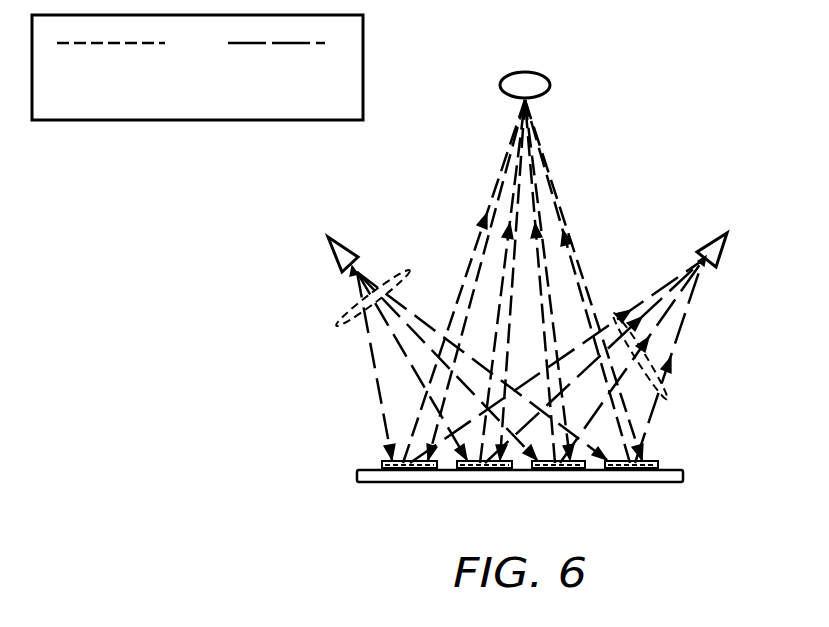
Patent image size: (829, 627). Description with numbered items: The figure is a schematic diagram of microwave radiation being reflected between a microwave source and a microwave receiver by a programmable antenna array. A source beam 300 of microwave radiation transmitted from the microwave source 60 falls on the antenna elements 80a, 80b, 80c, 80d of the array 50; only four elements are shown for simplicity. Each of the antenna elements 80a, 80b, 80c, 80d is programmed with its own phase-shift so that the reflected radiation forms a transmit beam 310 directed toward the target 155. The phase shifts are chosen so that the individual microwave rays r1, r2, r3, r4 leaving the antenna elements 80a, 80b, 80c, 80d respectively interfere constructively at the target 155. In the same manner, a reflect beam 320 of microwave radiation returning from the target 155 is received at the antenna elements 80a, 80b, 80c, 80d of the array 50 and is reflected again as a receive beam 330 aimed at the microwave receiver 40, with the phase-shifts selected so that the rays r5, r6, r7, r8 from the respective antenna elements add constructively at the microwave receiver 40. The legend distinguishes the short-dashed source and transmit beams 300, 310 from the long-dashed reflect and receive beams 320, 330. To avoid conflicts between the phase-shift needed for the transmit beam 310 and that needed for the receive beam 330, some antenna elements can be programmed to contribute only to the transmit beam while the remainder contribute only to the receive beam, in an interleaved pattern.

The target 155 is at (550, 85).
The microwave source 60 is at (332, 253).
The microwave receiver 40 is at (727, 250).
The array 50 is at (350, 477).
The antenna element 80a is at (389, 470).
The antenna element 80b is at (489, 470).
The antenna element 80c is at (557, 470).
The antenna element 80d is at (650, 470).
The source beam 300 is at (340, 330).
The transmit beam 310 is at (140, 44).
The reflect beam 320 is at (297, 44).
The receive beam 330 is at (665, 407).
The microwave ray r1 is at (506, 151).
The microwave ray r2 is at (507, 212).
The microwave ray r3 is at (535, 212).
The microwave ray r4 is at (537, 146).
The microwave ray r5 is at (677, 277).
The microwave ray r6 is at (663, 297).
The microwave ray r7 is at (663, 323).
The microwave ray r8 is at (683, 330).